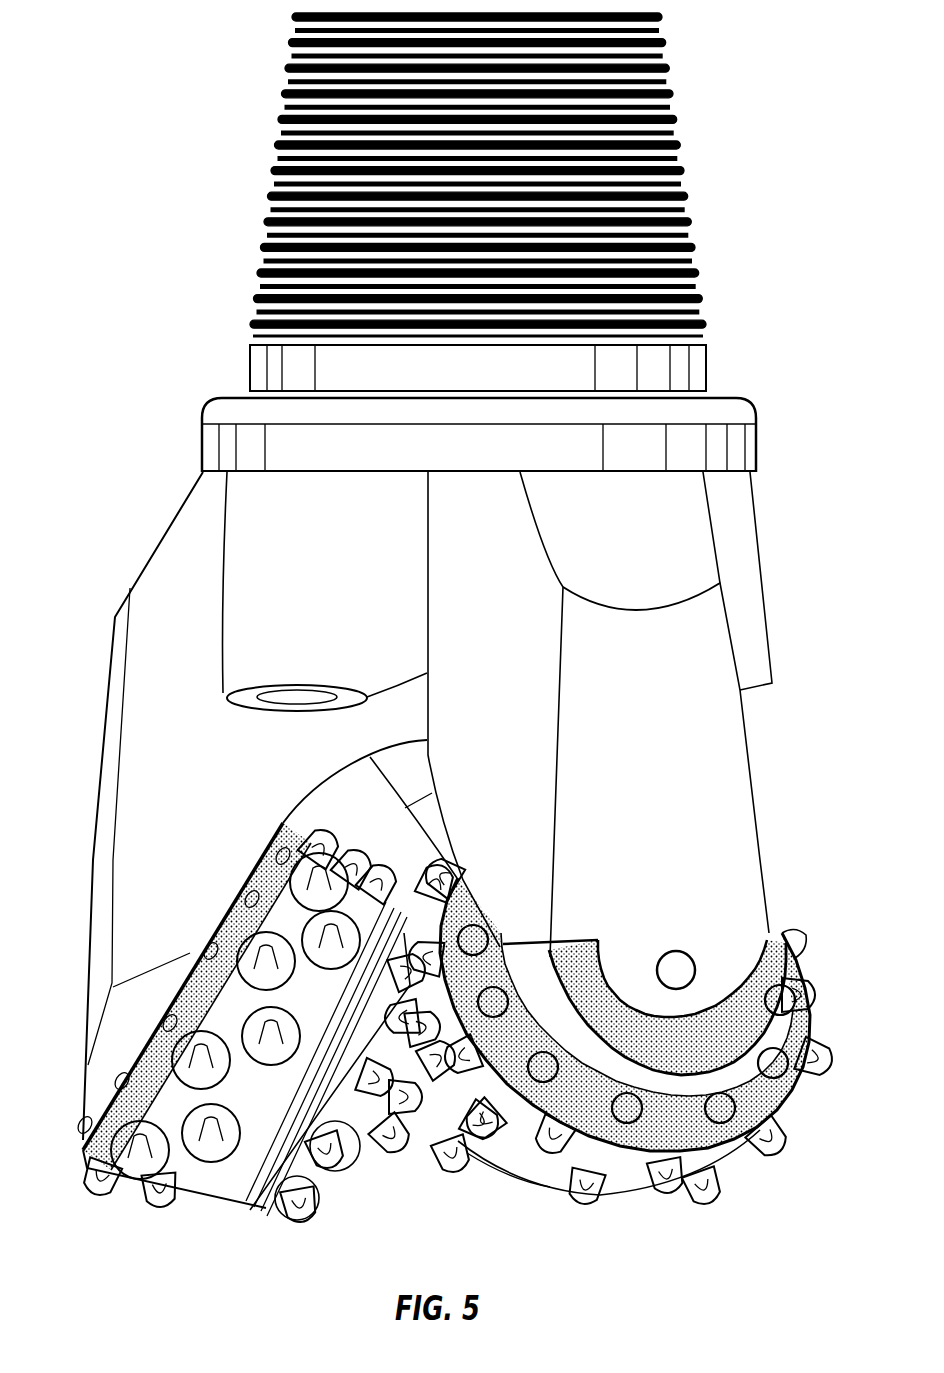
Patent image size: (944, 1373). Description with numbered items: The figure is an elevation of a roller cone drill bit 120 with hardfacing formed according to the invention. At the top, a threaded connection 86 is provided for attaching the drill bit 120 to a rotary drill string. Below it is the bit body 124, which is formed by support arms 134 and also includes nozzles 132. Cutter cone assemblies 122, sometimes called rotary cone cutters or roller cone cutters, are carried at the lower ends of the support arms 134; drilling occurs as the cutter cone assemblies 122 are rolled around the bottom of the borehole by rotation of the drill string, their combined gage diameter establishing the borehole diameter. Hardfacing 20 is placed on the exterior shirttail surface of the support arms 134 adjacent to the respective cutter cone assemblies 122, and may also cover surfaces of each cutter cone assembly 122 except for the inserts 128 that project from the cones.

The threaded connection 86 is at (670, 96).
The drill bit 120 is at (433, 769).
The bit body 124 is at (203, 595).
The nozzles 132 is at (243, 694).
The support arms 134 is at (133, 797).
The cutter cone assembly 122 is at (432, 1048).
The hardfacing 20 is at (217, 923).
The inserts 128 is at (160, 1207).